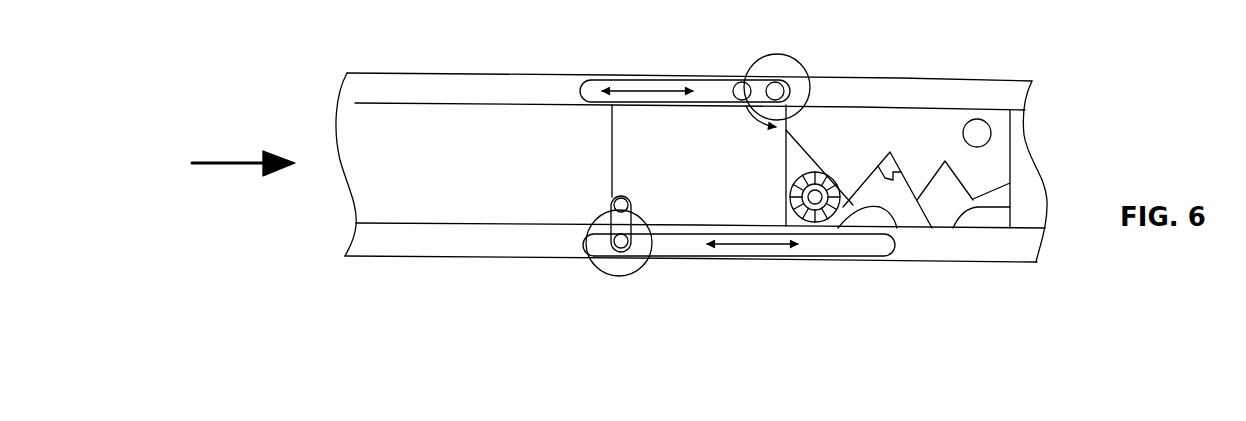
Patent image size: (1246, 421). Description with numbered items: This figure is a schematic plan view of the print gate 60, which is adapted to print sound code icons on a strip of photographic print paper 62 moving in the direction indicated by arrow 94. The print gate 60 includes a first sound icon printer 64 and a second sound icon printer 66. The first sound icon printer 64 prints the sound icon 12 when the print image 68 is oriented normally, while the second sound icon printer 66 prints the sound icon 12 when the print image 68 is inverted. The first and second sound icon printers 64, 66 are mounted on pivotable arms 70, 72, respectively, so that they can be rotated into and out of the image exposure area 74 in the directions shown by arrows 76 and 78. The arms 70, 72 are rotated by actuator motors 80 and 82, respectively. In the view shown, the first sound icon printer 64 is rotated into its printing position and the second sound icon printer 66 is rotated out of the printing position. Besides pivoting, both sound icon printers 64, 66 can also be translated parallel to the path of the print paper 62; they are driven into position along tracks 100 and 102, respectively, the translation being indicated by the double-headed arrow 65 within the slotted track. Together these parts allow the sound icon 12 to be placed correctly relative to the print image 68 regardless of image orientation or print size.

The print gate 60 is at (902, 56).
The photographic print paper 62 is at (1024, 213).
The print image 68 is at (983, 157).
The sound icon 12 is at (897, 228).
The track 102 is at (590, 85).
The second sound icon printer 66 is at (645, 92).
The pivotable arm 72 is at (790, 93).
The image exposure area 74 is at (708, 137).
The actuator motor 82 is at (752, 60).
The arrow 78 is at (747, 125).
The track 100 is at (853, 247).
The direction of travel arrow 65 is at (752, 248).
The pivotable arm 70 is at (645, 225).
The first sound icon printer 64 is at (613, 200).
The arrow 76 is at (612, 220).
The actuator motor 80 is at (598, 262).
The arrow 94 is at (215, 164).